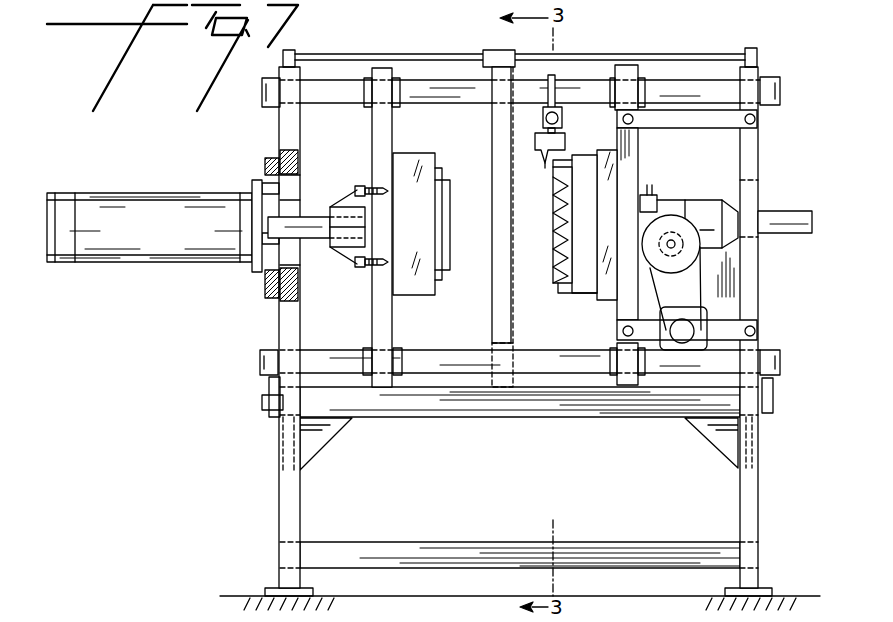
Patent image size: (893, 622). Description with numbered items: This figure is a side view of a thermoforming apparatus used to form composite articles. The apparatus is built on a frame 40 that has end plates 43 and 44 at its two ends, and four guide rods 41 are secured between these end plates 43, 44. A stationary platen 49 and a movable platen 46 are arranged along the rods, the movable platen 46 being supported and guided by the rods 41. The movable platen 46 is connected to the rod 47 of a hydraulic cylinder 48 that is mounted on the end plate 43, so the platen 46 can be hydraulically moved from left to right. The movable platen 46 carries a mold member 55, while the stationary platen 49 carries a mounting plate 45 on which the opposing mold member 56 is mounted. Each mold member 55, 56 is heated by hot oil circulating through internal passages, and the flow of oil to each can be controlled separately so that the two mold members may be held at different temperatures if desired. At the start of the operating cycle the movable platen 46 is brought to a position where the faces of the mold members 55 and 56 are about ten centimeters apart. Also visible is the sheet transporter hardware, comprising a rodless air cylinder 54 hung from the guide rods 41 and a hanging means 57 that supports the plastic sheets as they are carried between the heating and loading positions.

The frame 40 is at (759, 486).
The guide rods 41 is at (323, 82).
The end plate 43 is at (279, 326).
The end plate 44 is at (760, 283).
The mounting plate 45 is at (609, 171).
The movable platen 46 is at (379, 68).
The rod 47 is at (308, 216).
The hydraulic cylinder 48 is at (175, 232).
The stationary platen 49 is at (625, 66).
The rodless air cylinder 54 is at (561, 124).
The mold member 55 is at (427, 224).
The mold member 56 is at (553, 287).
The hanging means 57 is at (542, 127).